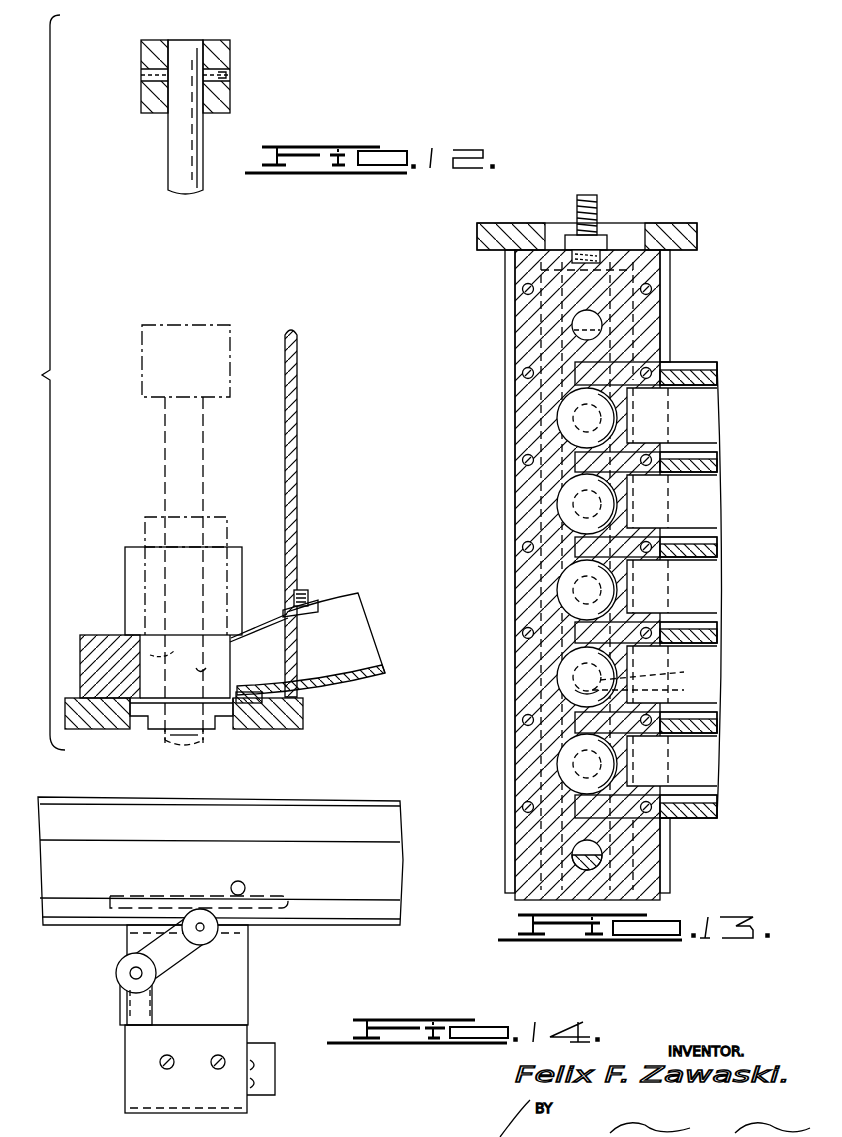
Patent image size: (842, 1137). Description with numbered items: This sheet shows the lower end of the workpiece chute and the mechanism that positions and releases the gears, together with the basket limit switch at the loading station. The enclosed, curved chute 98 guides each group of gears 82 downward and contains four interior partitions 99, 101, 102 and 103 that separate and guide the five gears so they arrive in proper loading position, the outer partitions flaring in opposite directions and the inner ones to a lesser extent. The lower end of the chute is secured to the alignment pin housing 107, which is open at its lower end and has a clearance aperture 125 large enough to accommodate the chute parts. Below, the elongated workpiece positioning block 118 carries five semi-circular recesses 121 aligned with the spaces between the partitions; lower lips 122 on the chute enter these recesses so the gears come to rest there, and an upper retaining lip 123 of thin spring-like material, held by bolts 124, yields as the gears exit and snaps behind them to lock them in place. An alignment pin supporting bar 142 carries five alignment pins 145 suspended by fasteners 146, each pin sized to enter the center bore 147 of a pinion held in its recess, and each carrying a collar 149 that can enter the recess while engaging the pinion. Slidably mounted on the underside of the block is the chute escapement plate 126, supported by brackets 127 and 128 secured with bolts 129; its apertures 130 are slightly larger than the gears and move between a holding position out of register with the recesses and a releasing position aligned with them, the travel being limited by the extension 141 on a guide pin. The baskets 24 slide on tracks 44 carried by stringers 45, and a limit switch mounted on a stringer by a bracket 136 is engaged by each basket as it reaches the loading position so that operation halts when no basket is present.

In FIG. 12, the alignment pin supporting bar 142 is at (230, 52).
In FIG. 14, the alignment pin supporting bar 142 is at (226, 340).
In FIG. 12, the fasteners 146 is at (228, 73).
In FIG. 12, the alignment pins 145 is at (195, 133).
In FIG. 13, the alignment pins 145 is at (661, 669).
In FIG. 14, the alignment pins 145 is at (172, 449).
In FIG. 14, the collars 149 is at (212, 522).
In FIG. 14, the alignment pin housing 107 is at (300, 446).
In FIG. 13, the workpiece positioning block 118 is at (648, 314).
In FIG. 14, the workpiece positioning block 118 is at (82, 650).
In FIG. 13, the semi-circular recesses 121 is at (575, 428).
In FIG. 14, the semi-circular recesses 121 is at (168, 650).
In FIG. 14, the upper retaining lip 123 is at (260, 618).
In FIG. 14, the clearance aperture 125 is at (303, 592).
In FIG. 14, the bolts 124 is at (310, 622).
In FIG. 14, the center bore 147 is at (205, 668).
In FIG. 13, the lower lips 122 is at (645, 425).
In FIG. 14, the lower lips 122 is at (248, 690).
In FIG. 13, the chute 98 is at (719, 378).
In FIG. 14, the chute 98 is at (386, 680).
In FIG. 13, the interior partition 99 is at (720, 461).
In FIG. 13, the interior partition 101 is at (721, 548).
In FIG. 13, the interior partition 102 is at (721, 633).
In FIG. 13, the interior partition 103 is at (720, 721).
In FIG. 13, the bracket 127 is at (505, 335).
In FIG. 14, the bracket 127 is at (80, 727).
In FIG. 13, the bracket 128 is at (670, 277).
In FIG. 14, the bracket 128 is at (285, 730).
In FIG. 14, the chute escapement plate 126 is at (132, 727).
In FIG. 13, the apertures 130 is at (575, 676).
In FIG. 14, the apertures 130 is at (140, 738).
In FIG. 13, the gears 82 is at (651, 690).
In FIG. 14, the gears 82 is at (208, 738).
In FIG. 13, the bolts 129 is at (522, 291).
In FIG. 13, the extension 141 is at (598, 862).
In FIG. 14, the tracks 44 is at (388, 824).
In FIG. 14, the stringers 45 is at (388, 912).
In FIG. 14, the baskets 24 is at (200, 888).
In FIG. 14, the bracket 136 is at (130, 1076).